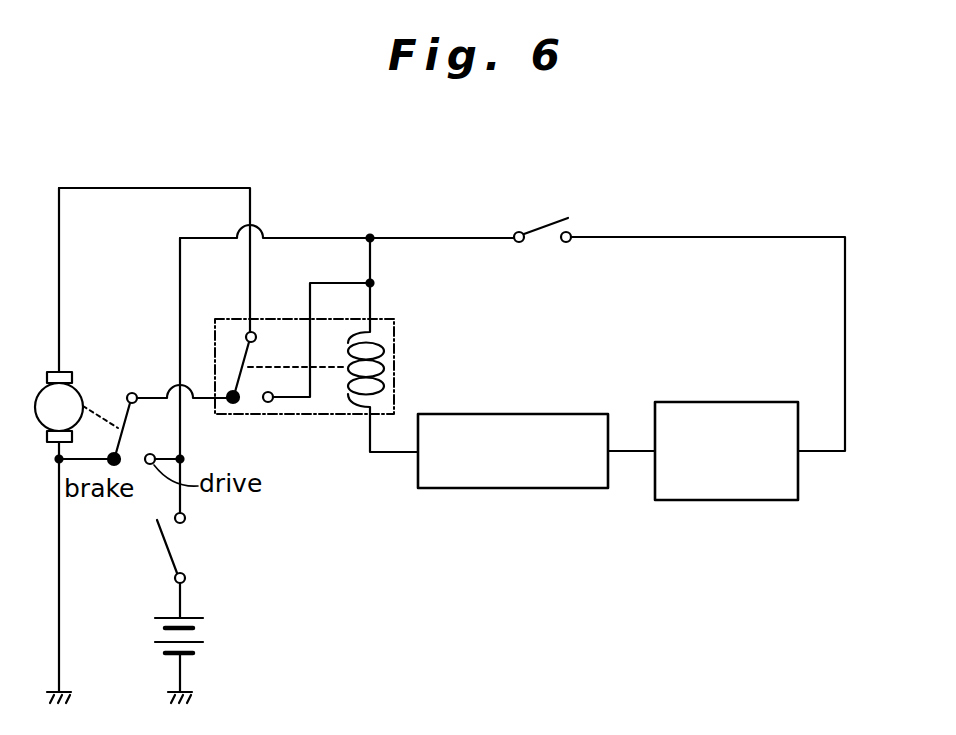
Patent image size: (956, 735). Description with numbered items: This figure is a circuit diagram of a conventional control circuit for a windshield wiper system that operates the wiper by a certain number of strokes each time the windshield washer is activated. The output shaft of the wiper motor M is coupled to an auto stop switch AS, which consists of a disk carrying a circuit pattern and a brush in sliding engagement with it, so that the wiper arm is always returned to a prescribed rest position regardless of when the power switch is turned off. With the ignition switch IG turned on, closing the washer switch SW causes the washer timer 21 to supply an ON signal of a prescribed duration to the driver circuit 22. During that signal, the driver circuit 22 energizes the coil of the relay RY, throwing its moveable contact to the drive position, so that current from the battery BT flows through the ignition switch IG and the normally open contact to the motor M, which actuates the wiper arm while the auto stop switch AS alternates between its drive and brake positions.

The washer timer 21 is at (755, 500).
The driver circuit 22 is at (537, 488).
The relay RY is at (395, 352).
The washer switch SW is at (542, 218).
The auto stop switch AS is at (134, 408).
The ignition switch IG is at (156, 548).
The battery BT is at (159, 635).
The wiper motor M is at (59, 407).